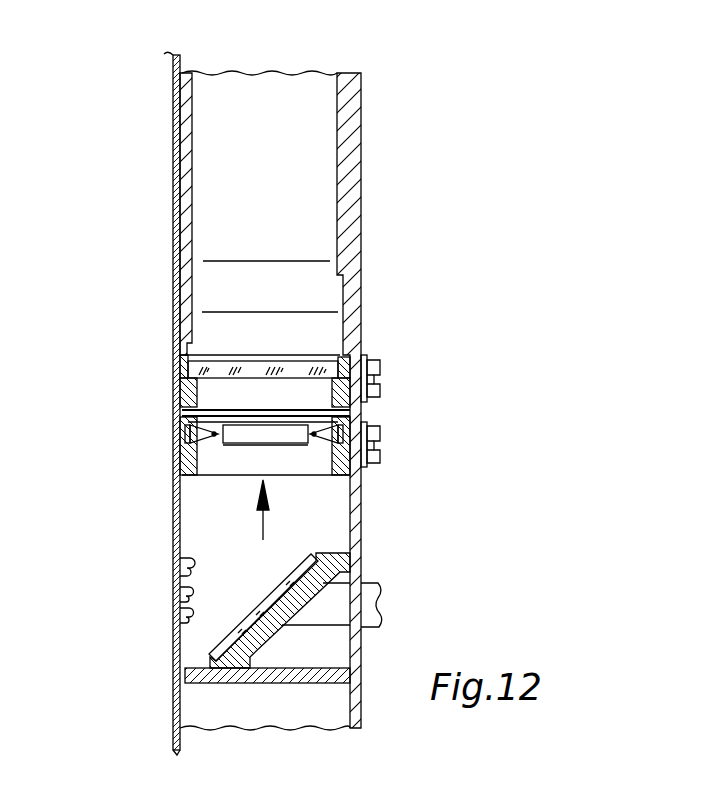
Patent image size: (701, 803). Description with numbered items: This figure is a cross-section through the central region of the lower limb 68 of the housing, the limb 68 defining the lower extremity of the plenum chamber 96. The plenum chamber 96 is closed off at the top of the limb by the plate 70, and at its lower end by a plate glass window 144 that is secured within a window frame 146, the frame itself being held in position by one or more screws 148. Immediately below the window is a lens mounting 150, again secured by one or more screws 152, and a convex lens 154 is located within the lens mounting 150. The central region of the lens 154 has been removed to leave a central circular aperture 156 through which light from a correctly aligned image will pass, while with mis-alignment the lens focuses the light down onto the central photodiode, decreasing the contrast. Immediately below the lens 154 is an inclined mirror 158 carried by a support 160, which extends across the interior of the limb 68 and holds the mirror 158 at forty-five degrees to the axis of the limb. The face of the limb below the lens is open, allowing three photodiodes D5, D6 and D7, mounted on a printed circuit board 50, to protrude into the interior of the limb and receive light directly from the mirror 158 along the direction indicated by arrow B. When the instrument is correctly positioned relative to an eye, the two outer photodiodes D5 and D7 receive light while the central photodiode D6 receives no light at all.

The printed circuit board 50 is at (173, 330).
The limb 68 is at (361, 167).
The plate 70 is at (190, 95).
The plenum chamber 96 is at (274, 188).
The plate glass window 144 is at (312, 362).
The window frame 146 is at (318, 364).
The screw 148 is at (380, 393).
The lens mounting 150 is at (345, 477).
The screw 152 is at (380, 455).
The convex lens 154 is at (214, 437).
The central circular aperture 156 is at (250, 436).
The inclined mirror 158 is at (304, 553).
The support 160 is at (340, 570).
The photodiode D5 is at (176, 558).
The photodiode D6 is at (177, 589).
The photodiode D7 is at (177, 612).
The viewing direction arrow B is at (269, 514).